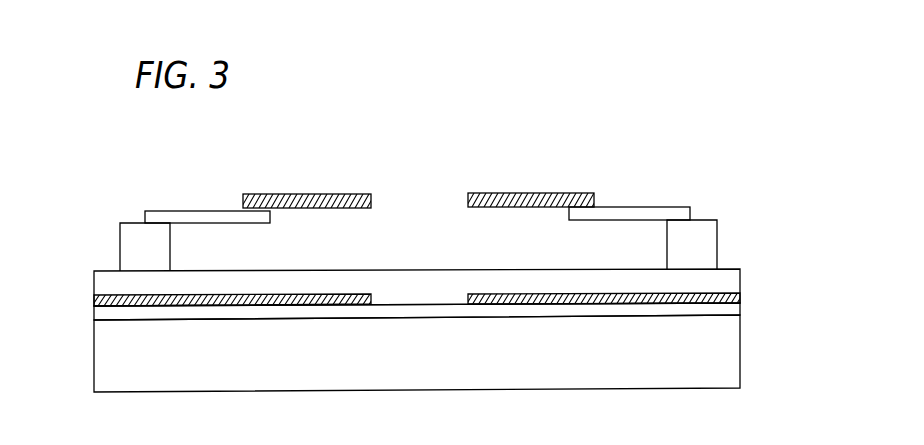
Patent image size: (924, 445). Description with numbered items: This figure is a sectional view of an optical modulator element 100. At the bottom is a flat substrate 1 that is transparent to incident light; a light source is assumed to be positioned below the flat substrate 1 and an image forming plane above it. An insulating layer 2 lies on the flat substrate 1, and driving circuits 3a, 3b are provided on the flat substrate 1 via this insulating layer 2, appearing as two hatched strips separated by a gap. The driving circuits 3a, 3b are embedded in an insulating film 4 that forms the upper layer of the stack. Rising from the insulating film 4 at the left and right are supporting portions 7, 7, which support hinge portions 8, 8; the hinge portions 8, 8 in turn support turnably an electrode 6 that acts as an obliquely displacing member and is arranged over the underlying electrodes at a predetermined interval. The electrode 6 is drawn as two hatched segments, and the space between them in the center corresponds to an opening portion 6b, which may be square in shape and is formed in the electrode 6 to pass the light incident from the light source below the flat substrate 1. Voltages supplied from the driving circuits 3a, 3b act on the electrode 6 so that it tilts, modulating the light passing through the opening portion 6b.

The flat substrate 1 is at (740, 378).
The insulating layer 2 is at (740, 314).
The driving circuit 3a is at (96, 300).
The driving circuit 3b is at (740, 300).
The insulating film 4 is at (740, 272).
The electrode 6 is at (320, 194).
The opening portion 6b is at (428, 193).
The supporting portion 7 is at (160, 250).
The hinge portion 8 is at (170, 211).
The optical modulator element 100 is at (615, 149).